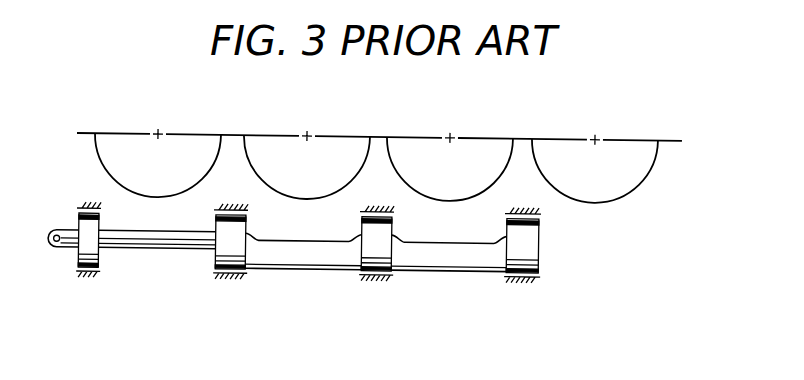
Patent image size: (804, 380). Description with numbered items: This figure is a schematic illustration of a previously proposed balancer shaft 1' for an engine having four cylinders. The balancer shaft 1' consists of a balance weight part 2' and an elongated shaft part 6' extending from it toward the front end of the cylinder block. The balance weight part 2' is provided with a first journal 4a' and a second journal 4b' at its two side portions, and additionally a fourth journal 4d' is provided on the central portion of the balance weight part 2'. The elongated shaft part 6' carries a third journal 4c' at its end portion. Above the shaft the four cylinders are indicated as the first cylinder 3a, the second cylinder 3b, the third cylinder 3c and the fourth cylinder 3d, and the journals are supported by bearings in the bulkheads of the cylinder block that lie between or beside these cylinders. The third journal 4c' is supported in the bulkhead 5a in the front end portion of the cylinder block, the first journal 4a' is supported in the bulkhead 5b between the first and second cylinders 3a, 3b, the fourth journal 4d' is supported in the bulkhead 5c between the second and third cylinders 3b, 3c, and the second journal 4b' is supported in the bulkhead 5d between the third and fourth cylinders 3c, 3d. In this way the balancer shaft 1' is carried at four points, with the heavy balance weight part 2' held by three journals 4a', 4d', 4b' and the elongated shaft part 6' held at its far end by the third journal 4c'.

The balancer shaft 1' is at (278, 309).
The balance weight part 2' is at (375, 276).
The first cylinder 3a is at (193, 143).
The second cylinder 3b is at (340, 144).
The third cylinder 3c is at (483, 148).
The fourth cylinder 3d is at (630, 150).
The first journal 4a' is at (219, 268).
The second journal 4b' is at (550, 246).
The third journal 4c' is at (109, 264).
The fourth journal 4d' is at (405, 267).
The bulkhead 5a is at (85, 206).
The bulkhead 5b is at (238, 207).
The bulkhead 5c is at (384, 208).
The bulkhead 5d is at (527, 209).
The elongated shaft part 6' is at (132, 266).